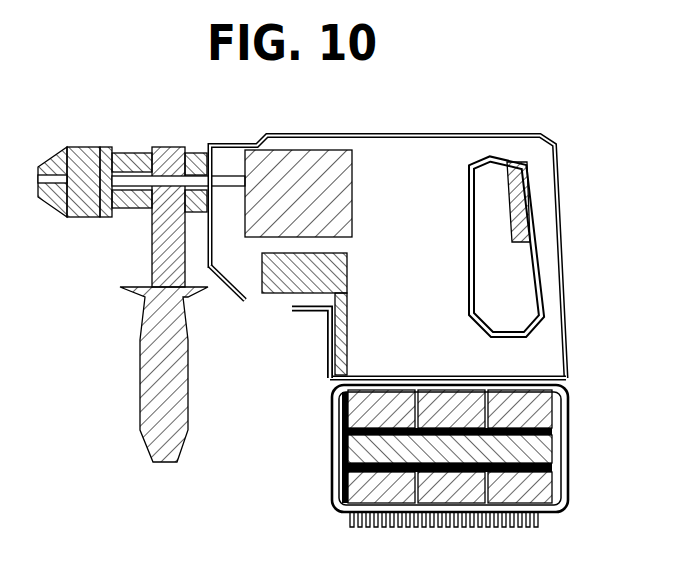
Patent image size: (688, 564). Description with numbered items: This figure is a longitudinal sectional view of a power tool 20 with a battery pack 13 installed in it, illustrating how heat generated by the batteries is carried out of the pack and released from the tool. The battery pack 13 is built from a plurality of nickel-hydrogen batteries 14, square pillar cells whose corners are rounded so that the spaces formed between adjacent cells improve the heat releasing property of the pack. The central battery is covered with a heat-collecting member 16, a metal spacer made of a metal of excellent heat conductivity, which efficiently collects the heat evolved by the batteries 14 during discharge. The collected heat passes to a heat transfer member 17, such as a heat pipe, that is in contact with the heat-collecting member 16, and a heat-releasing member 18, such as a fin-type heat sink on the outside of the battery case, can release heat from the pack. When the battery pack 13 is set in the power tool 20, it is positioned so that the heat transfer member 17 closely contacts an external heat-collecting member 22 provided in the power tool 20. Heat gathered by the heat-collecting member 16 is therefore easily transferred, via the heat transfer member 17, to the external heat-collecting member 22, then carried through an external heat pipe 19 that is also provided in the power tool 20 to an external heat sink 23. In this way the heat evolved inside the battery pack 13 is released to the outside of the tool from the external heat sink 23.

The battery pack 13 is at (448, 460).
The nickel-hydrogen battery 14 is at (542, 410).
The heat-collecting member 16 is at (540, 447).
The heat transfer member 17 is at (338, 418).
The heat-releasing member 18 is at (343, 520).
The external heat pipe 19 is at (327, 345).
The power tool 20 is at (450, 132).
The external heat-collecting member 22 is at (567, 382).
The external heat sink 23 is at (286, 281).